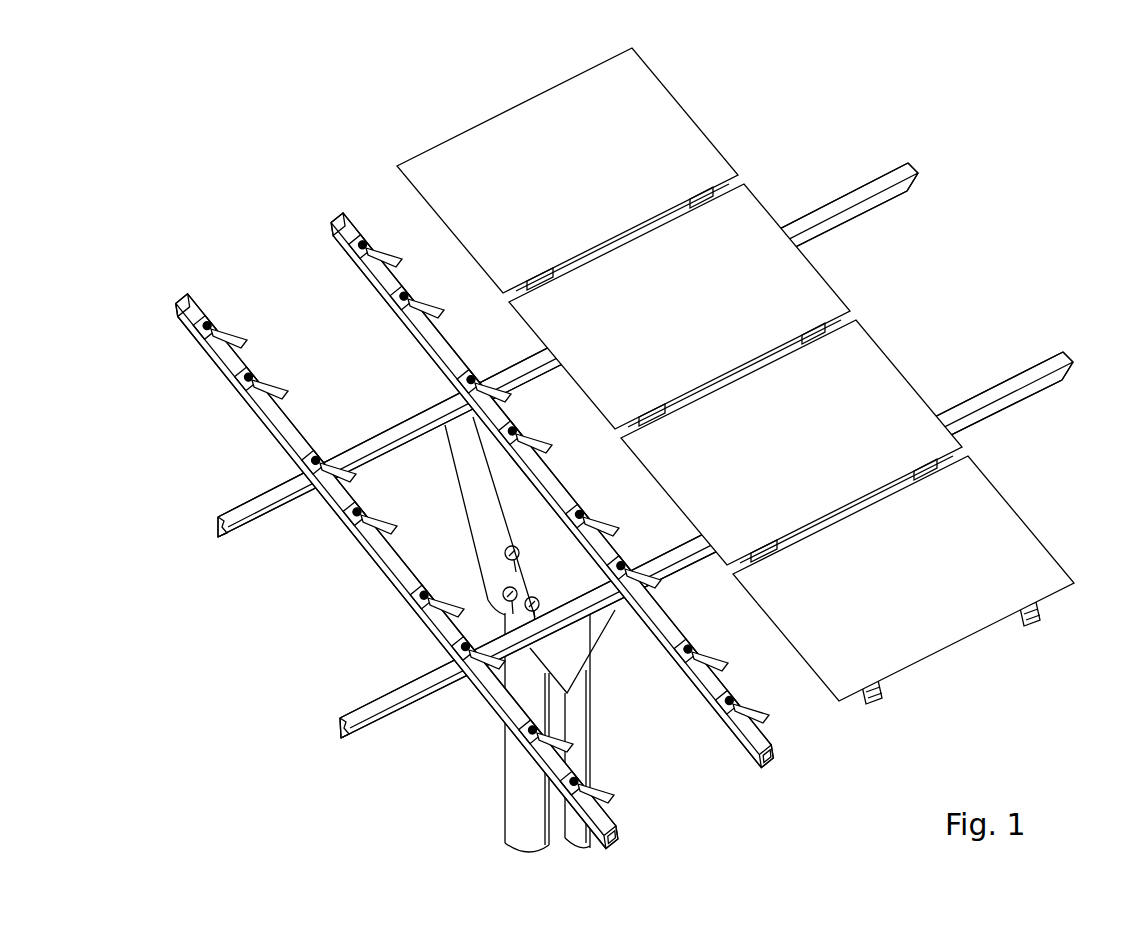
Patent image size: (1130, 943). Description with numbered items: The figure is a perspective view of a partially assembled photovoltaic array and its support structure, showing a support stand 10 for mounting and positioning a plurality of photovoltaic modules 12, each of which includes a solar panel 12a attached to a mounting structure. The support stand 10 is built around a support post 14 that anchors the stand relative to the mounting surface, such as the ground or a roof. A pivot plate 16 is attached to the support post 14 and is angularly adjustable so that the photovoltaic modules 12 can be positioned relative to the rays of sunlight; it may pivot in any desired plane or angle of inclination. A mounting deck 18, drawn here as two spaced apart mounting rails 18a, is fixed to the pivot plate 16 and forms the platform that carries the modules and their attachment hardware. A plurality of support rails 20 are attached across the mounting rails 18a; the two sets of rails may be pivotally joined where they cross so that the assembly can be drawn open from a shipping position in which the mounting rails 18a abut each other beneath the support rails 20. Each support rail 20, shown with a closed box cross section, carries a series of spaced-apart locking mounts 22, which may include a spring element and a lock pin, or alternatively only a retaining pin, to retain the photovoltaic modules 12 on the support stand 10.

The support stand 10 is at (260, 192).
The photovoltaic module 12 is at (736, 114).
The solar panel 12a is at (593, 175).
The support post 14 is at (517, 797).
The pivot plate 16 is at (582, 633).
The mounting deck 18 is at (241, 469).
The mounting rail 18a is at (217, 523).
The support rail 20 is at (185, 297).
The locking mount 22 is at (371, 283).